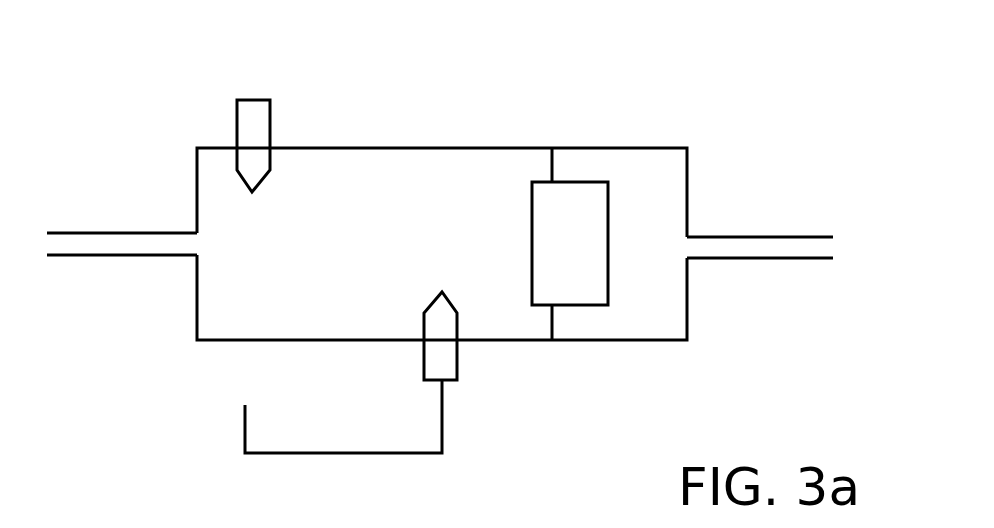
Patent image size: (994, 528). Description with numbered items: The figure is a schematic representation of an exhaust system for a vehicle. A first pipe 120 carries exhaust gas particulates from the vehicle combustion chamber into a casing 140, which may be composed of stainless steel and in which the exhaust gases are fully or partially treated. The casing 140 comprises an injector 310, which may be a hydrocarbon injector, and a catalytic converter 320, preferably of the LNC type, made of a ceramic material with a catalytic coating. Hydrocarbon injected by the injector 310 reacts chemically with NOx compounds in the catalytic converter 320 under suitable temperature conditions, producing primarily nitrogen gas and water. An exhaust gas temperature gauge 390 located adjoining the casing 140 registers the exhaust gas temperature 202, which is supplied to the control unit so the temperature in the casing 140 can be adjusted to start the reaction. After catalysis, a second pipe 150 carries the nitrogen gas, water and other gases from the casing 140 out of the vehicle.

The first pipe 120 is at (107, 231).
The casing 140 is at (345, 148).
The second pipe 150 is at (775, 237).
The injector 310 is at (252, 100).
The catalytic converter 320 is at (580, 182).
The exhaust gas temperature gauge 390 is at (457, 367).
The exhaust gas temperature 202 is at (373, 453).